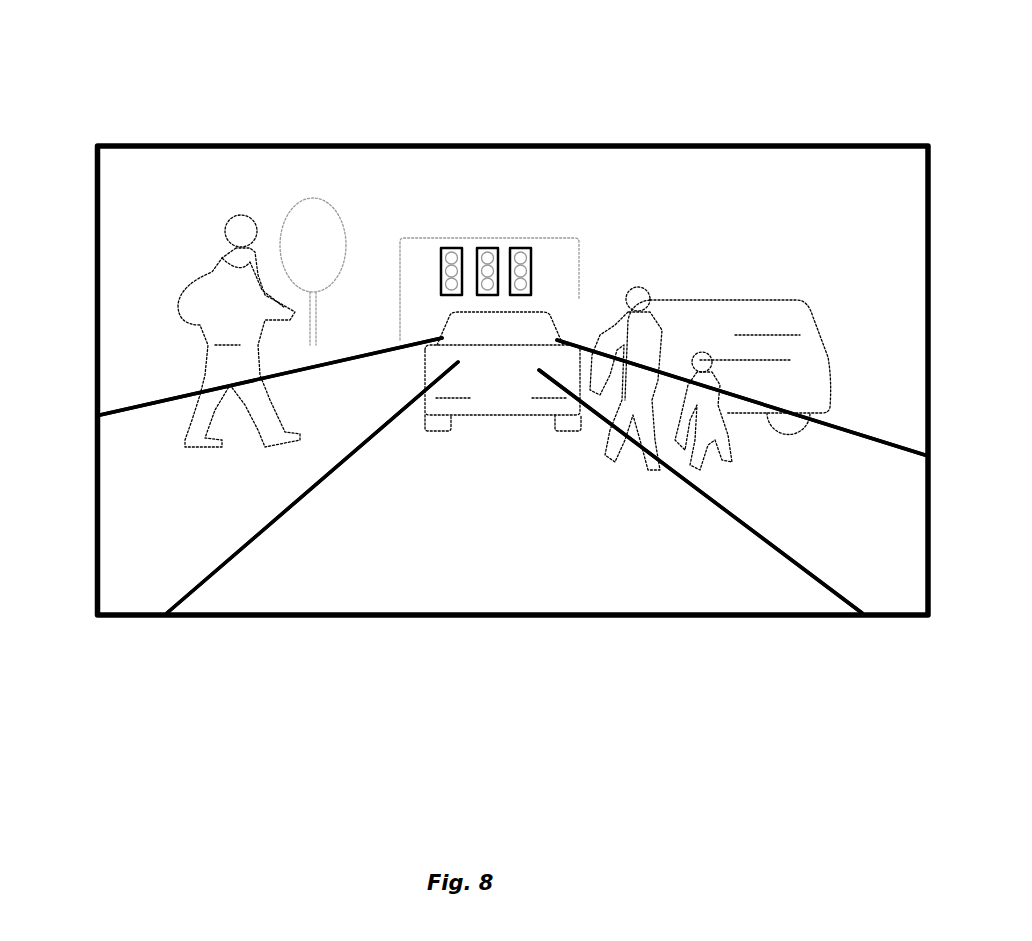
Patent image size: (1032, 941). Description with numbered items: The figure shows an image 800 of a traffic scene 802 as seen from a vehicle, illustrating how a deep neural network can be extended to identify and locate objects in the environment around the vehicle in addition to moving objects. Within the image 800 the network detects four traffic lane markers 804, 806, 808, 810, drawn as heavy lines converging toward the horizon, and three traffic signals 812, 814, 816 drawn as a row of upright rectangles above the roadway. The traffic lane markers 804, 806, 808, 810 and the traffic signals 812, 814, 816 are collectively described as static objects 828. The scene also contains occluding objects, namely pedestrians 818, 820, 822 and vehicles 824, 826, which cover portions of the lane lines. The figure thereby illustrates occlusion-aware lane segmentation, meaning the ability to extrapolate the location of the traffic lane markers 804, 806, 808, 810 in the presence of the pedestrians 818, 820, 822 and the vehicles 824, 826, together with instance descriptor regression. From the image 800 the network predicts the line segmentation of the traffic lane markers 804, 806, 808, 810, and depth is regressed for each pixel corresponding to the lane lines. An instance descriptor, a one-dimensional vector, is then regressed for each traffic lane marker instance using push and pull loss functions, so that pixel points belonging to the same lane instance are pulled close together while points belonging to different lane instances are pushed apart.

The image 800 is at (188, 615).
The traffic scene 802 is at (320, 567).
The traffic lane marker 804 is at (132, 416).
The traffic lane marker 806 is at (223, 555).
The traffic lane marker 808 is at (835, 592).
The traffic lane marker 810 is at (897, 450).
The traffic signal 812 is at (452, 248).
The traffic signal 814 is at (488, 248).
The traffic signal 816 is at (518, 248).
The pedestrian 818 is at (178, 308).
The pedestrian 820 is at (637, 287).
The pedestrian 822 is at (705, 350).
The vehicle 824 is at (443, 327).
The vehicle 826 is at (775, 302).
The static objects 828 is at (508, 540).